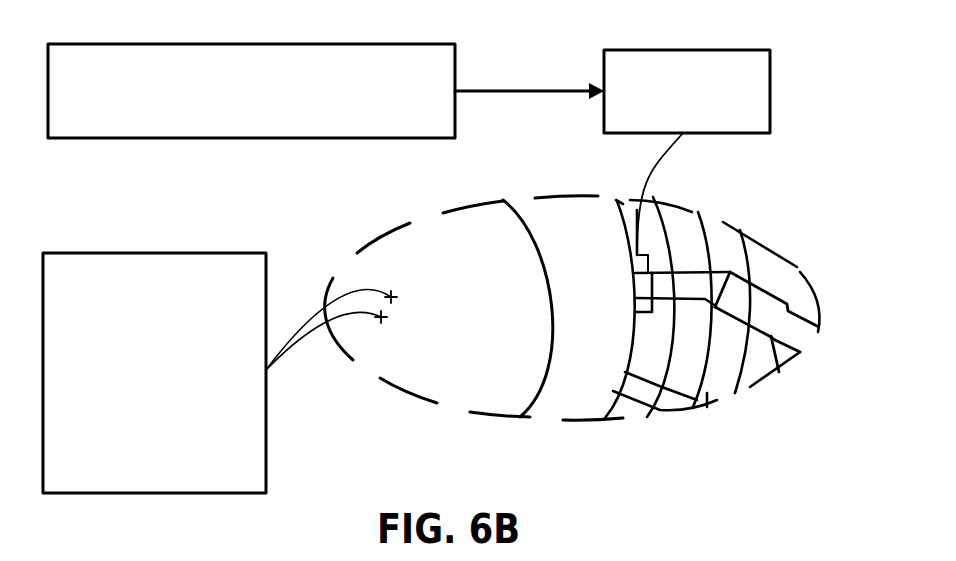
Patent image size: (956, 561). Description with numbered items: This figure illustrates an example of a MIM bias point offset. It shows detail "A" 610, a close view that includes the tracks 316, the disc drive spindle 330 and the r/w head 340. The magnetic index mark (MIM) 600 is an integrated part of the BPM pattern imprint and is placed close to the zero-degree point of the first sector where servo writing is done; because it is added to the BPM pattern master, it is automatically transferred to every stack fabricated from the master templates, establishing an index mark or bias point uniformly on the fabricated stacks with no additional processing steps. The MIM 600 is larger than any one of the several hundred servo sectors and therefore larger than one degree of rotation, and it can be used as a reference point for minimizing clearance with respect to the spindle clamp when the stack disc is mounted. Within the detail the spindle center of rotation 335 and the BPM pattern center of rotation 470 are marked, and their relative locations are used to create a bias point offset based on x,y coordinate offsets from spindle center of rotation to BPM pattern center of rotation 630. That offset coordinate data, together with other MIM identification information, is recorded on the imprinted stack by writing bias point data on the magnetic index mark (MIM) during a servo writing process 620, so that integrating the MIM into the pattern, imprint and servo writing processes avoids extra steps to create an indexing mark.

The magnetic index mark (MIM) 600 is at (617, 63).
The detail "A" 610 is at (538, 197).
The writing bias point data on the magnetic index mark (MIM) during a servo writing 620 is at (66, 122).
The bias point offset based on x,y coordinate offsets from spindle center of rotatio 630 is at (62, 262).
The disc drive spindle 330 is at (498, 390).
The spindle center of rotation 335 is at (381, 317).
The BPM pattern center of rotation 470 is at (391, 297).
The tracks 316 is at (707, 393).
The r/w head 340 is at (747, 283).